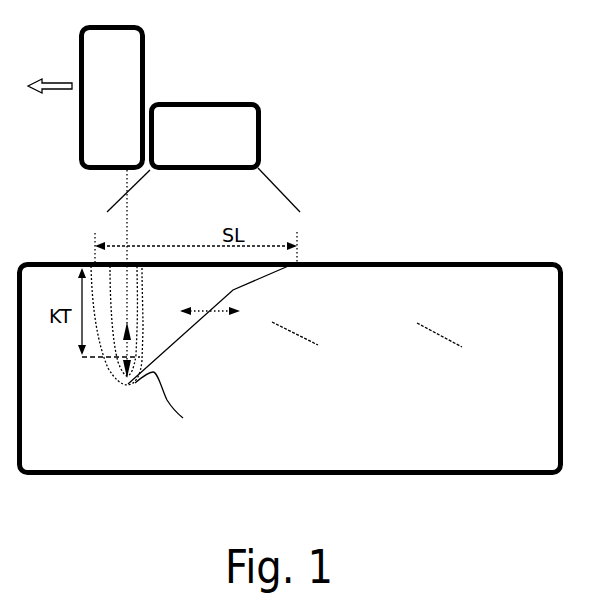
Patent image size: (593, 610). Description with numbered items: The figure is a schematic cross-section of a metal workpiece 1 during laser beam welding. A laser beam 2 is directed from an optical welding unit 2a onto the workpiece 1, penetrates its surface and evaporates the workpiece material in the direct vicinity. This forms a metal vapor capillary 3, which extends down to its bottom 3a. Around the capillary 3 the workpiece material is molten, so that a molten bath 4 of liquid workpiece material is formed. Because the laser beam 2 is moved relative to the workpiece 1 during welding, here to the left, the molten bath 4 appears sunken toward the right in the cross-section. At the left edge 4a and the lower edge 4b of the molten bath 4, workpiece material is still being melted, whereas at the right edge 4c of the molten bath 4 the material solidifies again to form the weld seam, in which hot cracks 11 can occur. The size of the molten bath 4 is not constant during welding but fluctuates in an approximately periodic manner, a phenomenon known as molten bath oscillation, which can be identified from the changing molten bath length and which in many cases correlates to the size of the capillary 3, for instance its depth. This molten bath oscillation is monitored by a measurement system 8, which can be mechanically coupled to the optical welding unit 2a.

The workpiece 1 is at (528, 277).
The laser beam 2 is at (128, 222).
The optical welding unit 2a is at (124, 46).
The metal vapor capillary 3 is at (114, 279).
The bottom of the capillary 3a is at (173, 404).
The molten bath 4 is at (165, 327).
The left edge of the molten bath 4a is at (100, 352).
The lower edge of the molten bath 4b is at (125, 382).
The right edge of the molten bath 4c is at (240, 294).
The measurement system 8 is at (243, 125).
The hot cracks 11 is at (307, 343).